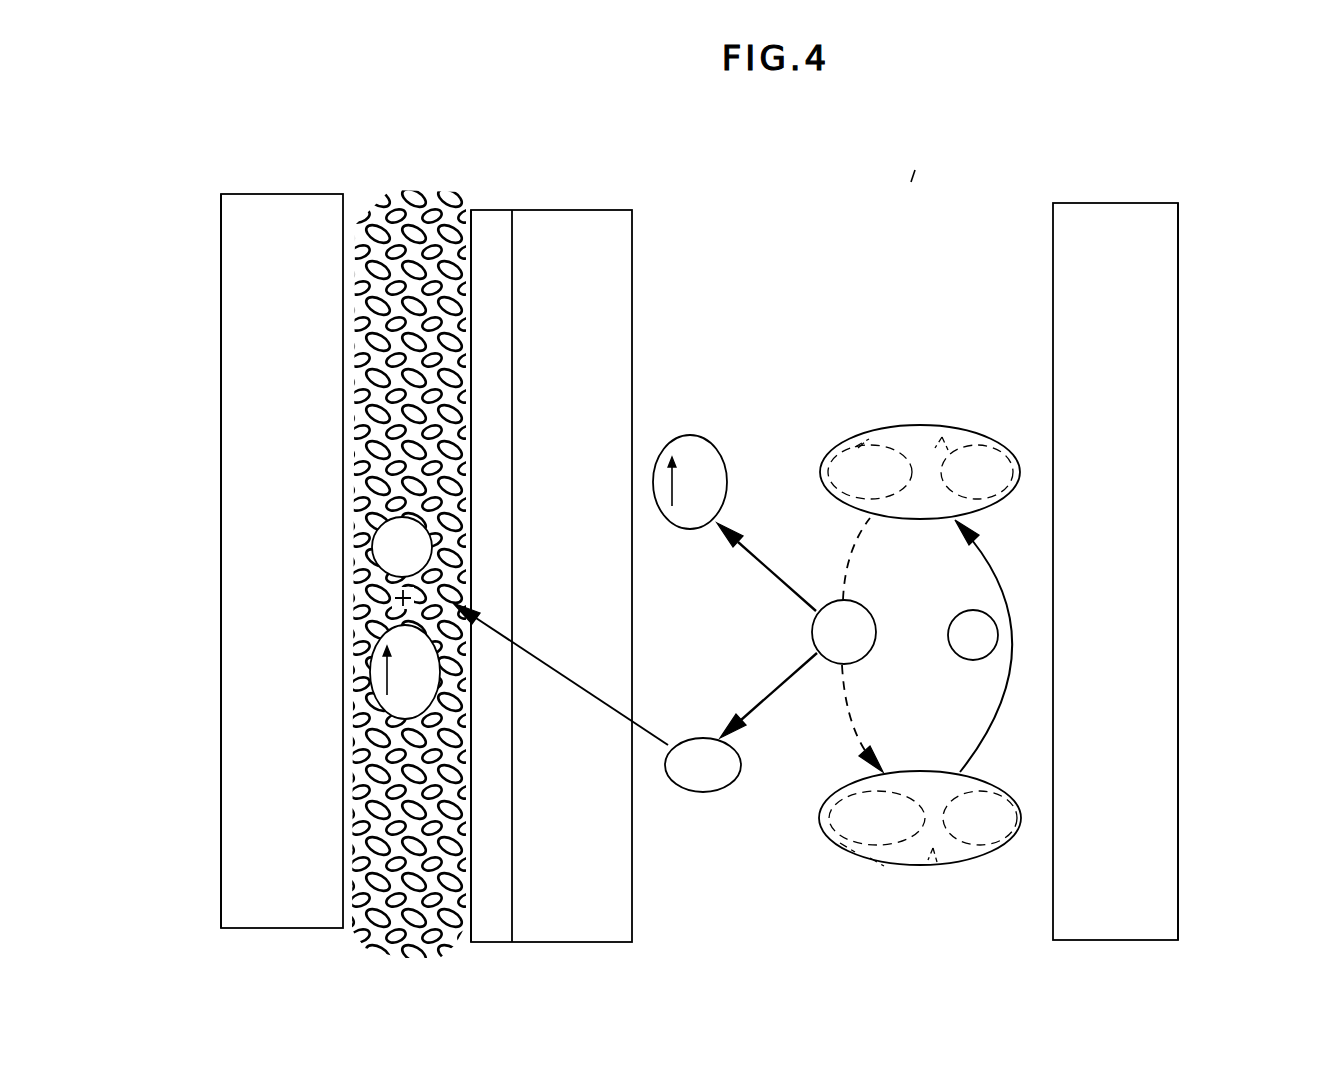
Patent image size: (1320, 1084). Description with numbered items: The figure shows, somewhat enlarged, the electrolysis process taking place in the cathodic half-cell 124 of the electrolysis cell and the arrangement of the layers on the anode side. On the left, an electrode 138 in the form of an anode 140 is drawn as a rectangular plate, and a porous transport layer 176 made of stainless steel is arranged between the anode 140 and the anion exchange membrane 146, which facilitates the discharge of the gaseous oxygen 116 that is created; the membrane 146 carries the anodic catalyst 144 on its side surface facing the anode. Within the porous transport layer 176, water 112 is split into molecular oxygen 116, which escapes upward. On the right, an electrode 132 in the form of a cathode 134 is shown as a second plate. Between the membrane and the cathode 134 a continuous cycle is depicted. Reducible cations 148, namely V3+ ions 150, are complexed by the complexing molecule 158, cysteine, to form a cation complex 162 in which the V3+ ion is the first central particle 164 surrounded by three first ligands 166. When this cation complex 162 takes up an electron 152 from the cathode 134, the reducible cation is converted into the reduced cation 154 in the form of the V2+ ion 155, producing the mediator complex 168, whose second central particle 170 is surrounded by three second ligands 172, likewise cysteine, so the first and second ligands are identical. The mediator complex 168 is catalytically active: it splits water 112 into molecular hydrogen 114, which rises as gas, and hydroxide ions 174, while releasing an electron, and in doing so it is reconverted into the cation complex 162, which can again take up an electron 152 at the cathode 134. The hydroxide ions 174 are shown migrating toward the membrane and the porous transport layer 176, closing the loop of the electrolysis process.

The water 112 is at (372, 545).
The molecular hydrogen 114 is at (690, 434).
The molecular oxygen 116 is at (372, 672).
The cathodic half-cell 124 is at (911, 182).
The electrode 132 is at (1166, 247).
The cathode 134 is at (1166, 300).
The electrode 138 is at (276, 212).
The anode 140 is at (245, 287).
The anodic catalyst 144 is at (492, 226).
The anion exchange membrane 146 is at (576, 230).
The reducible cations 148 is at (847, 847).
The V3+ ion 150 is at (817, 820).
The electron 152 is at (958, 615).
The reduced cation 154 is at (862, 443).
The V2+ ion 155 is at (860, 441).
The complexing molecule 158 is at (942, 437).
The cation complex 162 is at (929, 855).
The first central particle 164 is at (877, 862).
The first ligands 166 is at (967, 857).
The mediator complex 168 is at (941, 653).
The second central particle 170 is at (827, 457).
The second ligands 172 is at (977, 443).
The hydroxide ions 174 is at (696, 792).
The porous transport layer 176 is at (398, 222).